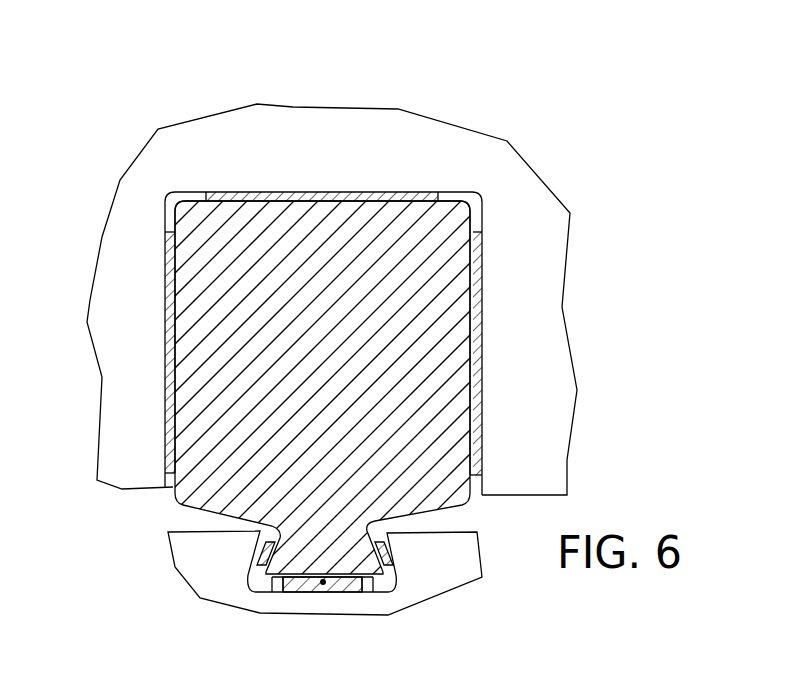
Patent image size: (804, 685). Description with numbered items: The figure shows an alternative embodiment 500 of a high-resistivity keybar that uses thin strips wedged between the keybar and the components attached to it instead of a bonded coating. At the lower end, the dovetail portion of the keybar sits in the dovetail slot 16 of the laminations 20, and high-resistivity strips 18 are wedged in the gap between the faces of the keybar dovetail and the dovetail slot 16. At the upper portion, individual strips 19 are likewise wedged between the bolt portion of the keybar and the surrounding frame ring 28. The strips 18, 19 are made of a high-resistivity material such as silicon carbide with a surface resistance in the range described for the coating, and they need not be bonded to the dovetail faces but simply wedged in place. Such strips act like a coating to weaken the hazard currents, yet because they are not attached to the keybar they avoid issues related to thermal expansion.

The frame ring 28 is at (303, 127).
The alternative embodiment of the keybar 500 is at (435, 164).
The individual strips 19 is at (170, 435).
The laminations 20 is at (282, 550).
The dovetail slot 16 is at (371, 566).
The high-resistivity strips 18 is at (378, 613).